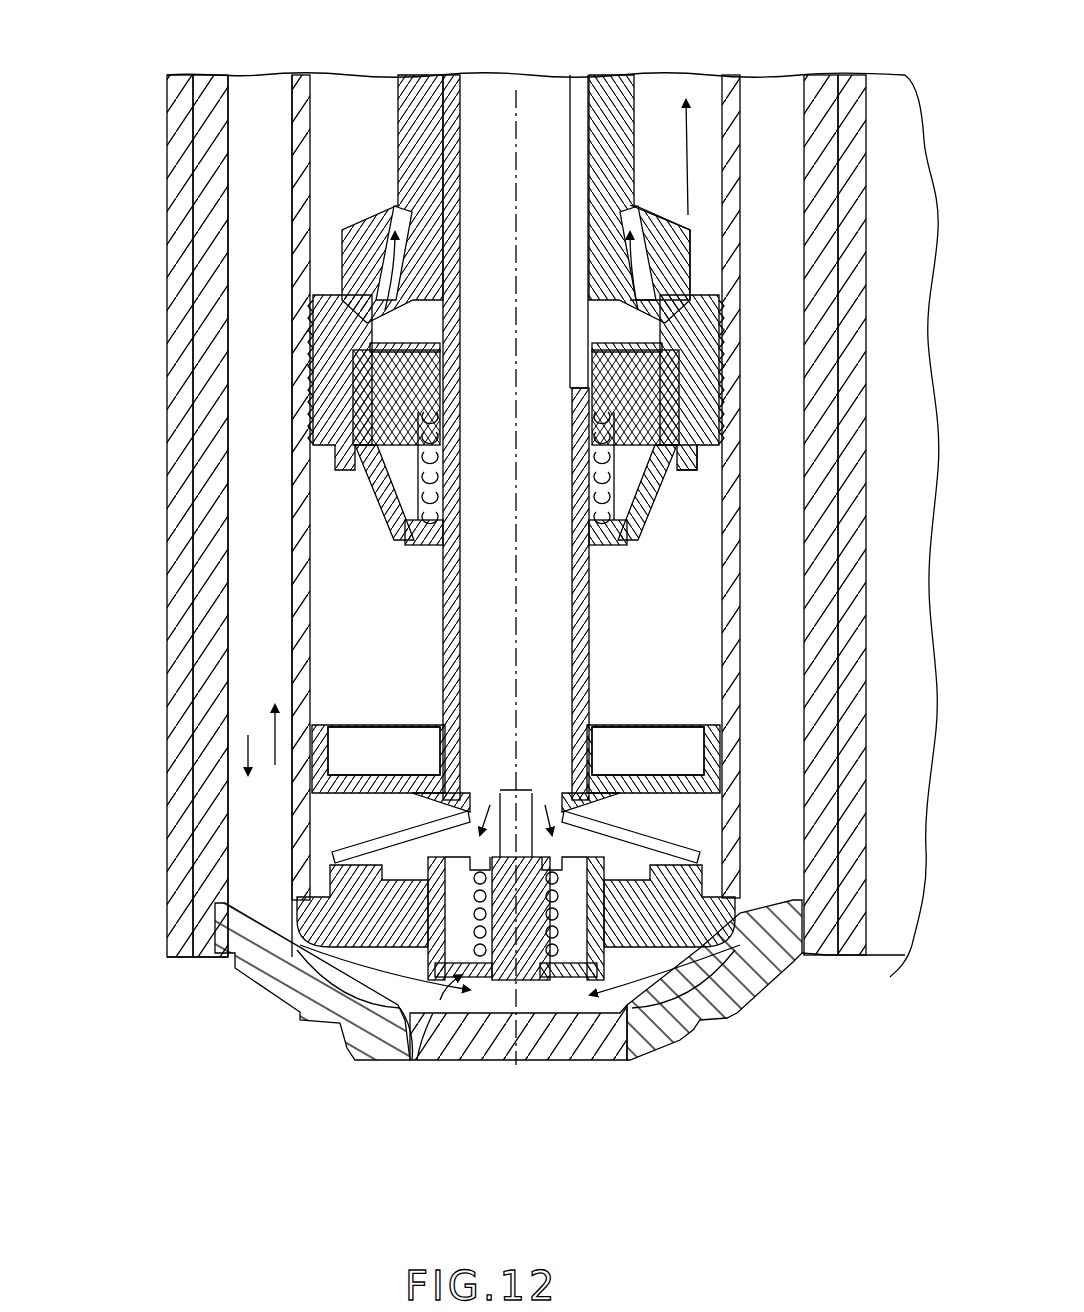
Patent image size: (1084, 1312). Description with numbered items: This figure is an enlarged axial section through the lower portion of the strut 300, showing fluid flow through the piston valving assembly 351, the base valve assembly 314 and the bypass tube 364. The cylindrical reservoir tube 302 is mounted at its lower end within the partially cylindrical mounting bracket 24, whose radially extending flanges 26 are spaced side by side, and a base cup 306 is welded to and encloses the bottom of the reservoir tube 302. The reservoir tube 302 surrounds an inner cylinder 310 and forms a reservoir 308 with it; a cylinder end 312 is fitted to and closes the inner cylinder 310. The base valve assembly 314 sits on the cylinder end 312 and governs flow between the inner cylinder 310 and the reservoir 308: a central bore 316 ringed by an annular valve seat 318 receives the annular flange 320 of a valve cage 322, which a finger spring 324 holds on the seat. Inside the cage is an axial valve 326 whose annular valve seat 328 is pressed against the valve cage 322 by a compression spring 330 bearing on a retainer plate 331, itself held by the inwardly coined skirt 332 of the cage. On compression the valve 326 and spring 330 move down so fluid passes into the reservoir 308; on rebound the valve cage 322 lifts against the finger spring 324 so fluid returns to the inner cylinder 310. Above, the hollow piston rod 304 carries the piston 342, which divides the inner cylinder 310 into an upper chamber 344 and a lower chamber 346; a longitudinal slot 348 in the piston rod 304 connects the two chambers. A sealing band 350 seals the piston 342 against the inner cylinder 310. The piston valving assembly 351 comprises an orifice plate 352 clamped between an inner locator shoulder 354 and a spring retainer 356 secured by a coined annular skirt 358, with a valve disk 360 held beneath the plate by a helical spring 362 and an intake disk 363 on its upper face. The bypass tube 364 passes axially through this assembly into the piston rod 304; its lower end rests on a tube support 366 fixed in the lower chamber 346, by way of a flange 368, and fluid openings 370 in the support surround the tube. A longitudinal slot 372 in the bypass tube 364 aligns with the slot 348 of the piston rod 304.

The mounting bracket 24 is at (188, 745).
The flanges 26 is at (903, 878).
The strut 300 is at (130, 385).
The reservoir tube 302 is at (205, 465).
The piston rod 304 is at (358, 95).
The base cup 306 is at (275, 975).
The reservoir 308 is at (268, 208).
The inner cylinder 310 is at (302, 500).
The cylinder end 312 is at (697, 923).
The base valve assembly 314 is at (448, 1060).
The central bore 316 is at (398, 1010).
The annular valve seat 318 is at (332, 868).
The annular flange 320 is at (703, 860).
The valve cage 322 is at (332, 800).
The finger spring 324 is at (700, 800).
The valve 326 is at (570, 935).
The annular valve seat 328 is at (525, 800).
The compression spring 330 is at (508, 935).
The retainer plate 331 is at (582, 985).
The skirt 332 is at (448, 985).
The piston 342 is at (700, 248).
The upper chamber 344 is at (706, 162).
The lower chamber 346 is at (708, 602).
The longitudinal slot 348 is at (618, 135).
The sealing band 350 is at (312, 340).
The piston valving assembly 351 is at (352, 532).
The orifice plate 352 is at (700, 430).
The inner locator shoulder 354 is at (330, 420).
The spring retainer 356 is at (632, 545).
The annular skirt 358 is at (650, 468).
The valve disk 360 is at (690, 455).
The helical spring 362 is at (410, 538).
The intake disk 363 is at (700, 300).
The bypass tube 364 is at (455, 622).
The tube support 366 is at (715, 727).
The flange 368 is at (422, 786).
The fluid openings 370 is at (375, 760).
The longitudinal slot 372 is at (580, 388).